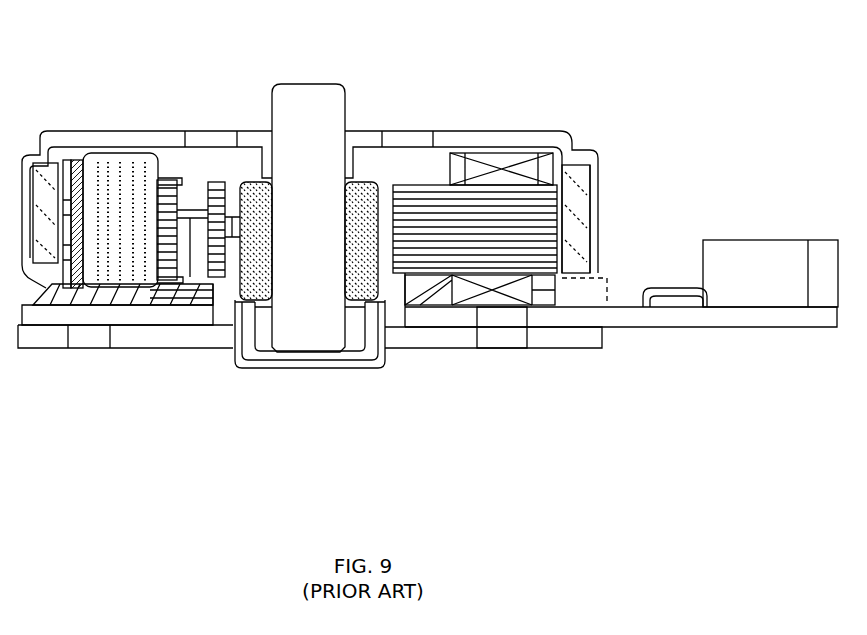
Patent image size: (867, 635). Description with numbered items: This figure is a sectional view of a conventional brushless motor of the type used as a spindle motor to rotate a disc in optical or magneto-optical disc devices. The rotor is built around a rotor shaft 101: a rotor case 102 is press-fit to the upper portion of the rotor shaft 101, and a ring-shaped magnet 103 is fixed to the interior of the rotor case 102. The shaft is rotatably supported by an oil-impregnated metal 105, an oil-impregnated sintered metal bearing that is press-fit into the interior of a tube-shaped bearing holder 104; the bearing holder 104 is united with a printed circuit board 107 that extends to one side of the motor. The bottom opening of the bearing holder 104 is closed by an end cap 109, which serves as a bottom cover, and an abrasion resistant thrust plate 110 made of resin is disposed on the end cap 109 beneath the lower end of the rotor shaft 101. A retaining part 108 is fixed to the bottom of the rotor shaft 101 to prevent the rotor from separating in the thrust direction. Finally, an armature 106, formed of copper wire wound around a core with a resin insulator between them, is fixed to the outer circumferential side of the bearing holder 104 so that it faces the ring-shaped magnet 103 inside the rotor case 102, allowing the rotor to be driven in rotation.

The rotor shaft 101 is at (342, 88).
The rotor case 102 is at (472, 133).
The ring-shaped magnet 103 is at (583, 200).
The bearing holder 104 is at (393, 350).
The oil-impregnated metal 105 is at (345, 280).
The armature 106 is at (477, 243).
The printed circuit board 107 is at (627, 327).
The retaining part 108 is at (387, 360).
The end cap 109 is at (327, 370).
The thrust plate 110 is at (268, 350).